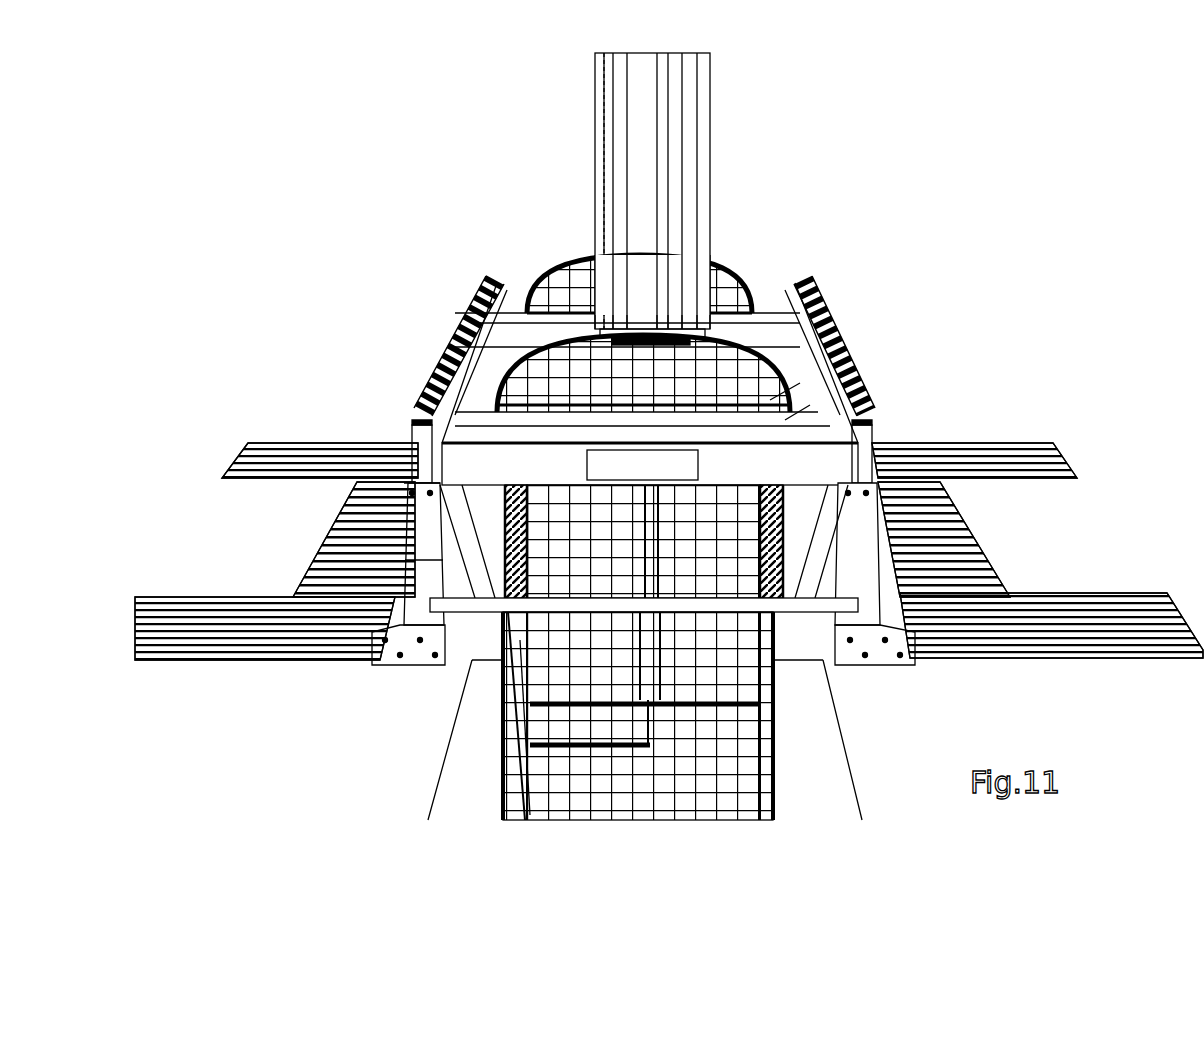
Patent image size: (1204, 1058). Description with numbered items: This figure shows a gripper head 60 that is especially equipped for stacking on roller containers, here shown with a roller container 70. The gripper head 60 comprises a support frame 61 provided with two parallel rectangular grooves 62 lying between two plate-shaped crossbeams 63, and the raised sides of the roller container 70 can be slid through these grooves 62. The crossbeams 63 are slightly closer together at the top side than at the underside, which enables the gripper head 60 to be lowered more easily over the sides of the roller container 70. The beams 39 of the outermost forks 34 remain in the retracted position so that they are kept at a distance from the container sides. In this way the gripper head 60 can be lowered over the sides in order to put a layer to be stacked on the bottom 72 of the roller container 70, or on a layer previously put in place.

The gripper head 60 is at (380, 310).
The support frame 61 is at (480, 309).
The rectangular grooves 62 is at (780, 296).
The plate-shaped crossbeams 63 is at (787, 323).
The outermost forks 34 is at (440, 391).
The beams 39 is at (323, 484).
The roller container 70 is at (770, 736).
The bottom 72 is at (545, 796).